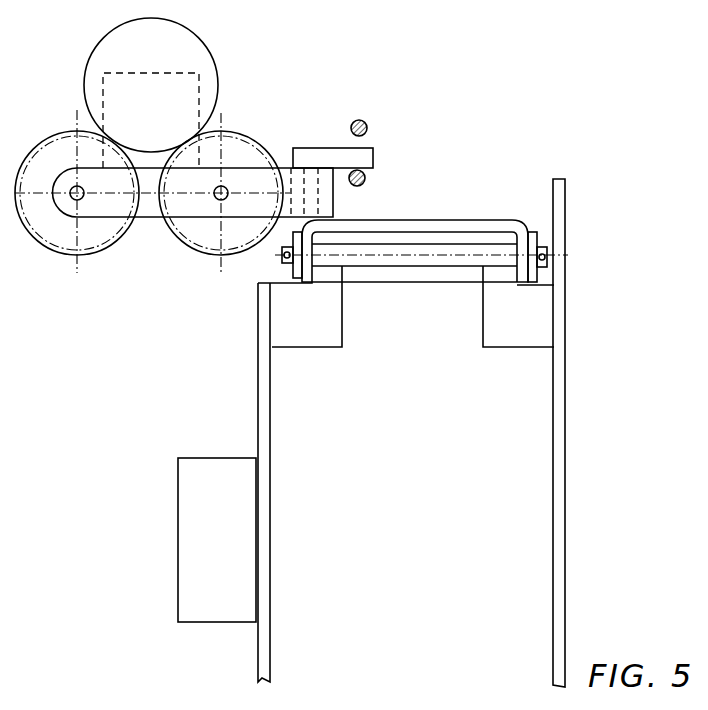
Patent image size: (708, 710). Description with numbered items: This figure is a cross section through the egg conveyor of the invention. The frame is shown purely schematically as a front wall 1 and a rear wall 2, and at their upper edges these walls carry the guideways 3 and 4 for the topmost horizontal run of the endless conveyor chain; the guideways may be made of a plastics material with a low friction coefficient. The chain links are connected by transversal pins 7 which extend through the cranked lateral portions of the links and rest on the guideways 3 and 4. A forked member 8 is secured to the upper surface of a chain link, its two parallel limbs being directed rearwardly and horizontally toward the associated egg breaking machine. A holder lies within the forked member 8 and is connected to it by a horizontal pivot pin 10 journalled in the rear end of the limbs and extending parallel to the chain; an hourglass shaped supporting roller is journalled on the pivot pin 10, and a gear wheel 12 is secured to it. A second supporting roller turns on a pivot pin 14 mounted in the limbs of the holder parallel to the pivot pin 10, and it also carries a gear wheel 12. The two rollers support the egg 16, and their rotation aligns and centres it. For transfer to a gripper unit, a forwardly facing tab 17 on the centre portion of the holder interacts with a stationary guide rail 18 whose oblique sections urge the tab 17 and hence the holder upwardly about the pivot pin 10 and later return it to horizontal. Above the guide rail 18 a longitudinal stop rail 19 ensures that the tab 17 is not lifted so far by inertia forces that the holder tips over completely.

The front wall 1 is at (560, 515).
The rear wall 2 is at (263, 535).
The guideway 3 is at (492, 332).
The guideway 4 is at (332, 335).
The transversal pin 7 is at (417, 263).
The forked member 8 is at (150, 215).
The pivot pin 10 is at (77, 192).
The gear wheel 12 is at (95, 250).
The pivot pin 14 is at (228, 188).
The egg 16 is at (200, 57).
The tab 17 is at (365, 160).
The guide rail 18 is at (366, 181).
The stop rail 19 is at (368, 125).